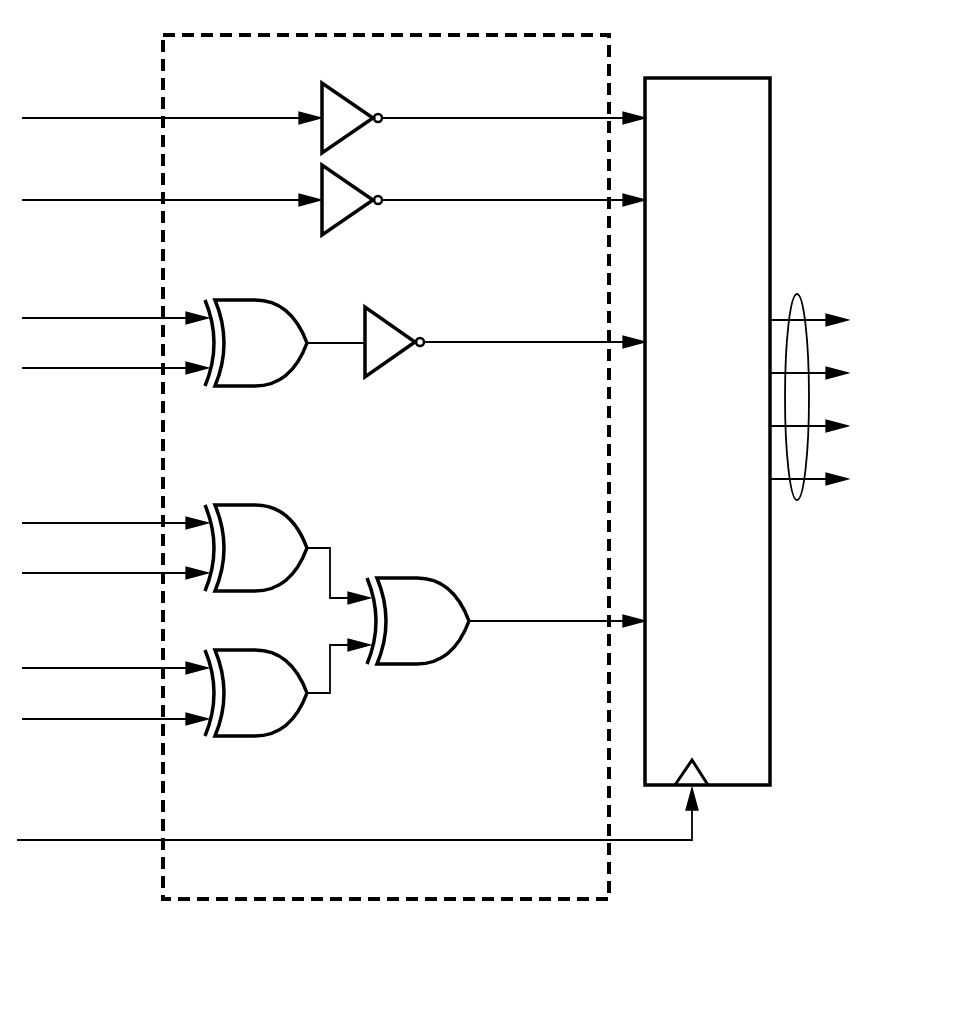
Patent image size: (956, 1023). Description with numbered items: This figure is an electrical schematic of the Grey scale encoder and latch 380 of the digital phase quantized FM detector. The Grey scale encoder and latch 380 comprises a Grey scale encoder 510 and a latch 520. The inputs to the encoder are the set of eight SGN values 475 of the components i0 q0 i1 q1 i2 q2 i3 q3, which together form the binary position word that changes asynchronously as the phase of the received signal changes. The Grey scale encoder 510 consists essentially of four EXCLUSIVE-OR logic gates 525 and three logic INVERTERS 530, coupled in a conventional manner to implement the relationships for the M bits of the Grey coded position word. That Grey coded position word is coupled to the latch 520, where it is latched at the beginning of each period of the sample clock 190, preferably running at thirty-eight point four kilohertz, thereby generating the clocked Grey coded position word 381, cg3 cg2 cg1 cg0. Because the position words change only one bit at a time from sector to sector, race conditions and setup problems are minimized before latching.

The Grey scale encoder and latch 380 is at (432, 508).
The Grey scale encoder 510 is at (163, 68).
The SGN values 475 is at (63, 119).
The logic INVERTERS 530 is at (340, 96).
The EXCLUSIVE-OR logic gates 525 is at (250, 300).
The latch 520 is at (767, 107).
The sample clock 190 is at (35, 845).
The clocked Grey coded position word 381 is at (808, 488).